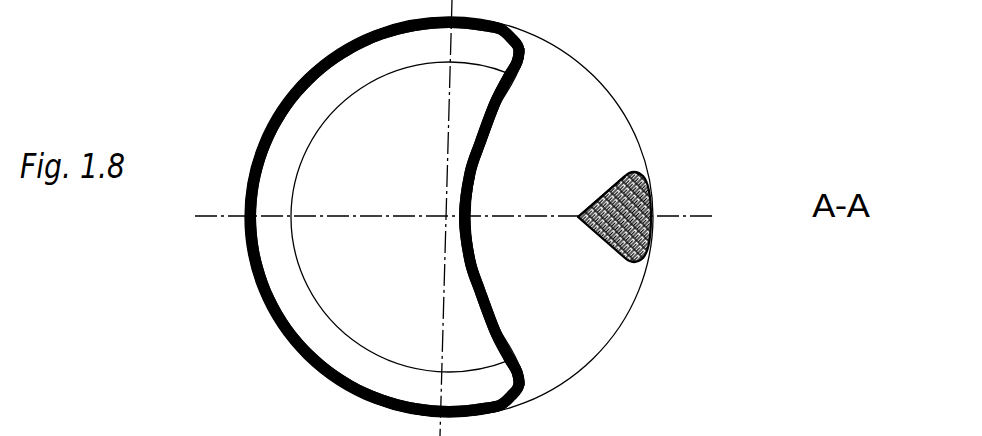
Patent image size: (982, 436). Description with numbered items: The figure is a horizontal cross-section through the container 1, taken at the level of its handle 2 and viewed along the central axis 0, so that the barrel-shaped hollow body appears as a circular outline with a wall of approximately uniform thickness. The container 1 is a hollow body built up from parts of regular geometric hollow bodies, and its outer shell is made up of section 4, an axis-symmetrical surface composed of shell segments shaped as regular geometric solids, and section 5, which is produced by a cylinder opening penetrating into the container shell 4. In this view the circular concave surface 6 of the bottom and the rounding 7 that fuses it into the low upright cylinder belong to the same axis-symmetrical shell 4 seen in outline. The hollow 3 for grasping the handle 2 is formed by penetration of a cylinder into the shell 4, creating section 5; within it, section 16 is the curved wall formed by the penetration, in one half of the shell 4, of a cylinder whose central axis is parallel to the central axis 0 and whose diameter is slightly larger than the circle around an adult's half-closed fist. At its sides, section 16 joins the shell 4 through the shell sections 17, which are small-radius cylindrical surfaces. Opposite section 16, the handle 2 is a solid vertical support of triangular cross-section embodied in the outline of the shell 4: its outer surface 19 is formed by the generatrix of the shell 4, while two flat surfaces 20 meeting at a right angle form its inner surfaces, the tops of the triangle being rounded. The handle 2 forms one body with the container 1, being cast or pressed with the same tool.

The central axis 0 is at (446, 215).
The container 1 is at (242, 342).
The handle 2 is at (664, 237).
The hollow 3 is at (550, 140).
The section of outer shell 4 is at (264, 137).
The section of outer shell 5 is at (483, 288).
The circular concave surface 6 is at (379, 8).
The rounding 7 is at (254, 9).
The section 16 is at (473, 168).
The shell sections 17 is at (524, 50).
The outer surface of handle 19 is at (653, 203).
The flat surfaces 20 is at (601, 196).